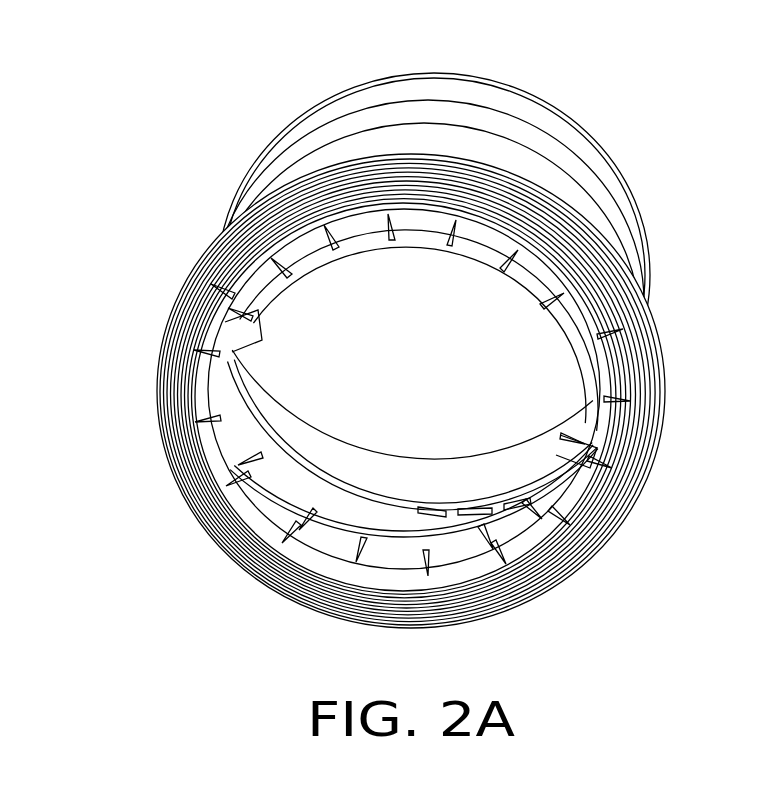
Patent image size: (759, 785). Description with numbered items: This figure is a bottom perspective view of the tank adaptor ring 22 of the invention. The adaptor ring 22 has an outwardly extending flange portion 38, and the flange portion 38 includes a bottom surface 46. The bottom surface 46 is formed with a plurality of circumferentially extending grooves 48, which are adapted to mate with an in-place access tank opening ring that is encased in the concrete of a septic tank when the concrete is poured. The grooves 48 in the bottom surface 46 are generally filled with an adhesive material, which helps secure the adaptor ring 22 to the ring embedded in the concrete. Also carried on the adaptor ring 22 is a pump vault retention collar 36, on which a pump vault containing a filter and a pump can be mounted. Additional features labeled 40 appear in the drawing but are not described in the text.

The tank adaptor ring 22 is at (586, 152).
The pump vault retention collar 36 is at (352, 222).
The outwardly extending flange portion 38 is at (660, 350).
The radial fins 40 is at (243, 475).
The bottom surface 46 is at (643, 418).
The grooves 48 is at (543, 577).